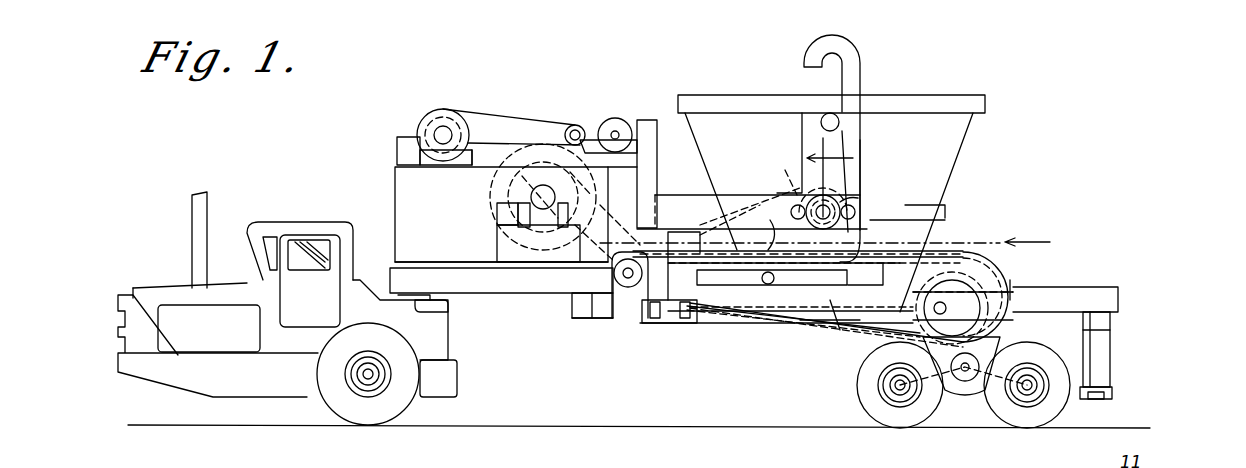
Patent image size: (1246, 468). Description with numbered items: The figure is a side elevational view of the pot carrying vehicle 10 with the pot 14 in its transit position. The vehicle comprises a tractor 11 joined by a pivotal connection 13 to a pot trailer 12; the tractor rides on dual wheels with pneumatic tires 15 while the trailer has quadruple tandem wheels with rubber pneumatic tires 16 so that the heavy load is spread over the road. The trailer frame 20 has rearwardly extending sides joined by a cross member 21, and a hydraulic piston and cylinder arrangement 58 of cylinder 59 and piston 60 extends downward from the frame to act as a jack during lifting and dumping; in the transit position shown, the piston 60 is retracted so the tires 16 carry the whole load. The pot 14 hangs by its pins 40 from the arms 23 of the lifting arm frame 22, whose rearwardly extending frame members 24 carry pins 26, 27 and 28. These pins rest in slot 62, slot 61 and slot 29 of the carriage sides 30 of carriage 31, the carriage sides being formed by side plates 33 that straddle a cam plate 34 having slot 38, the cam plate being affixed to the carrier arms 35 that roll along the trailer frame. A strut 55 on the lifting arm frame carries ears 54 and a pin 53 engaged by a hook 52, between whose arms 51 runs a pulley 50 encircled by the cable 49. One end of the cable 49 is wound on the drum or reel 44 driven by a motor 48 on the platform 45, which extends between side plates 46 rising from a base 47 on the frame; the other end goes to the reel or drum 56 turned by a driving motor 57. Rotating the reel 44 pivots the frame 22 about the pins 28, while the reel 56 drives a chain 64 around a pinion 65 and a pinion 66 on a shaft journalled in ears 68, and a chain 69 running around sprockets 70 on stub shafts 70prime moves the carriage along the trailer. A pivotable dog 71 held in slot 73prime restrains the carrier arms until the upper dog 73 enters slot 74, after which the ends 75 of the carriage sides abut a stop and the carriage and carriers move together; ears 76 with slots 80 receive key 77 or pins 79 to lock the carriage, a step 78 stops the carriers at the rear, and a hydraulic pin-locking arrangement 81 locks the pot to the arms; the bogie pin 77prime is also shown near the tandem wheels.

The pot carrying vehicle 10 is at (1063, 108).
The tractor 11 is at (158, 288).
The pot trailer 12 is at (577, 328).
The pivotal connection 13 is at (452, 312).
The pot 14 is at (970, 145).
The pneumatic tires 15 is at (364, 425).
The rubber pneumatic tires 16 is at (892, 426).
The trailer frame 20 is at (573, 308).
The cross member 21 is at (590, 315).
The lifting arm frame 22 is at (862, 148).
The arms 23 is at (858, 55).
The frame members 24 is at (692, 202).
The pins 26 is at (770, 200).
The pins 27 is at (850, 190).
The pins 28 is at (857, 212).
The slot 29 is at (836, 328).
The carriage sides 30 is at (805, 300).
The carriage 31 is at (740, 300).
The side plates 33 is at (810, 342).
The cam plate 34 is at (946, 220).
The carrier arms 35 is at (790, 322).
The slot 38 is at (943, 206).
The pins 40 is at (828, 112).
The drum or reel 44 is at (452, 110).
The platform 45 is at (472, 160).
The side plates 46 is at (397, 177).
The base 47 is at (500, 284).
The motor 48 is at (405, 137).
The cable 49 is at (532, 118).
The pulley 50 is at (578, 124).
The arms 51 is at (603, 128).
The hook 52 is at (657, 162).
The pin 53 is at (628, 118).
The ears 54 is at (657, 138).
The strut 55 is at (612, 182).
The reel or drum 56 is at (520, 168).
The driving motor 57 is at (497, 215).
The hydraulic piston and cylinder arrangement 58 is at (1112, 352).
The cylinder 59 is at (1112, 332).
The piston 60 is at (1114, 395).
The slot 61 is at (828, 193).
The slot 62 is at (795, 190).
The chain 64 is at (555, 255).
The pinion 65 is at (500, 190).
The pinion 66 is at (628, 258).
The ears 68 is at (617, 315).
The chain 69 is at (870, 375).
The sprockets 70 is at (998, 265).
The stub shafts 70prime is at (988, 312).
The pivotable dog 71 is at (762, 286).
The upper dog 73 is at (722, 216).
The slot 73prime is at (1012, 285).
The slot 74 is at (778, 240).
The ends 75 is at (637, 325).
The ears 76 is at (660, 320).
The key 77 is at (948, 410).
The bogie pin 77prime is at (965, 382).
The step 78 is at (1105, 288).
The pins 79 is at (952, 308).
The slots 80 is at (678, 322).
The hydraulic pin-locking arrangement 81 is at (860, 200).